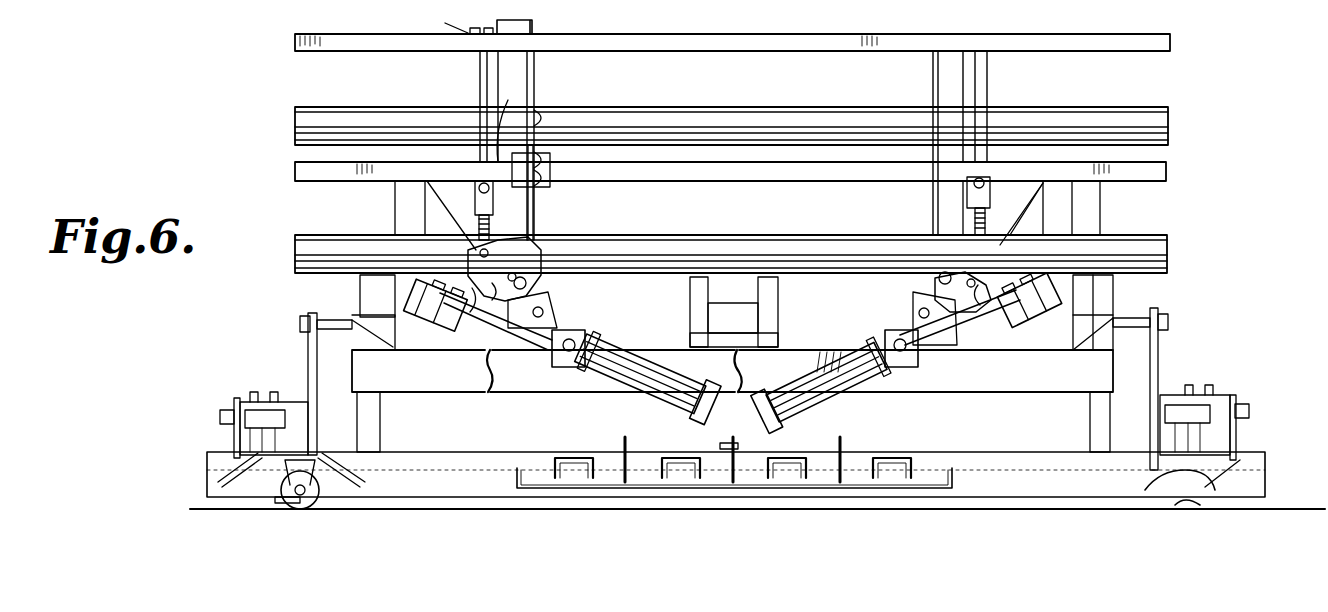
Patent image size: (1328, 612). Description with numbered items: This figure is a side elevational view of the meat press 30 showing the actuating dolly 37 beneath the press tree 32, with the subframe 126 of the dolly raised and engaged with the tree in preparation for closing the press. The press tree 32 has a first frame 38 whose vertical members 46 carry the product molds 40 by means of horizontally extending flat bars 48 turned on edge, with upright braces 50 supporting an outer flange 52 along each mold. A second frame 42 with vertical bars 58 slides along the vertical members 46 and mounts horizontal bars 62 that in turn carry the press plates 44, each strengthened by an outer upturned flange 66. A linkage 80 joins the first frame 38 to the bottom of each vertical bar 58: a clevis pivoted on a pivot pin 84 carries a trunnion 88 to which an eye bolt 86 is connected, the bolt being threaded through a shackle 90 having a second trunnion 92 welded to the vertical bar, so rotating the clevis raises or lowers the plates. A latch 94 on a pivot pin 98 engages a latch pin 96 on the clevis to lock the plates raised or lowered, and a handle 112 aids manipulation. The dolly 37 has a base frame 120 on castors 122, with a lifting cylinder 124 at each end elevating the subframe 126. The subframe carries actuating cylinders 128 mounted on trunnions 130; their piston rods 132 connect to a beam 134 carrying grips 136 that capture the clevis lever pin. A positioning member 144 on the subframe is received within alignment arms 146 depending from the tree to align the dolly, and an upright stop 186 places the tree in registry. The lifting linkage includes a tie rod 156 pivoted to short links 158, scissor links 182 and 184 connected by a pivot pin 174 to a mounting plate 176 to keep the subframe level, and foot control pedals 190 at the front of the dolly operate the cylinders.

The meat press 30 is at (1236, 128).
The press tree 32 is at (1183, 102).
The actuating dolly 37 is at (1240, 324).
The first frame 38 is at (533, 20).
The product mold 40 is at (1168, 128).
The second frame 42 is at (452, 20).
The press plate 44 is at (1135, 42).
The vertical member 46 is at (533, 75).
The flat bar 48 is at (545, 186).
The upright brace 50 is at (534, 112).
The outer flange 52 is at (565, 112).
The vertical bar 58 is at (480, 87).
The horizontal bar 62 is at (509, 121).
The outer upturned flange 66 is at (1138, 174).
The linkage 80 is at (524, 256).
The pivot pin 84 is at (528, 288).
The eye bolt 86 is at (472, 222).
The trunnion 88 is at (732, 224).
The shackle 90 is at (493, 206).
The second trunnion 92 is at (478, 188).
The latch 94 is at (937, 286).
The latch pin 96 is at (733, 295).
The pivot pin 98 is at (555, 303).
The handle 112 is at (490, 312).
The base frame 120 is at (1275, 474).
The castor 122 is at (345, 484).
The lifting cylinder 124 is at (250, 428).
The subframe 126 is at (970, 383).
The actuating cylinder 128 is at (638, 402).
The trunnion 130 is at (558, 370).
The piston rod 132 is at (930, 360).
The beam 134 is at (432, 350).
The grip 136 is at (392, 297).
The positioning member 144 is at (733, 318).
The alignment arm 146 is at (697, 322).
The tie rod 156 is at (222, 412).
The short link 158 is at (236, 398).
The pivot pin 174 is at (300, 324).
The mounting plate 176 is at (370, 348).
The scissor link 182 is at (356, 433).
The scissor link 184 is at (308, 355).
The upright stop 186 is at (1068, 216).
The foot control pedal 190 is at (572, 458).